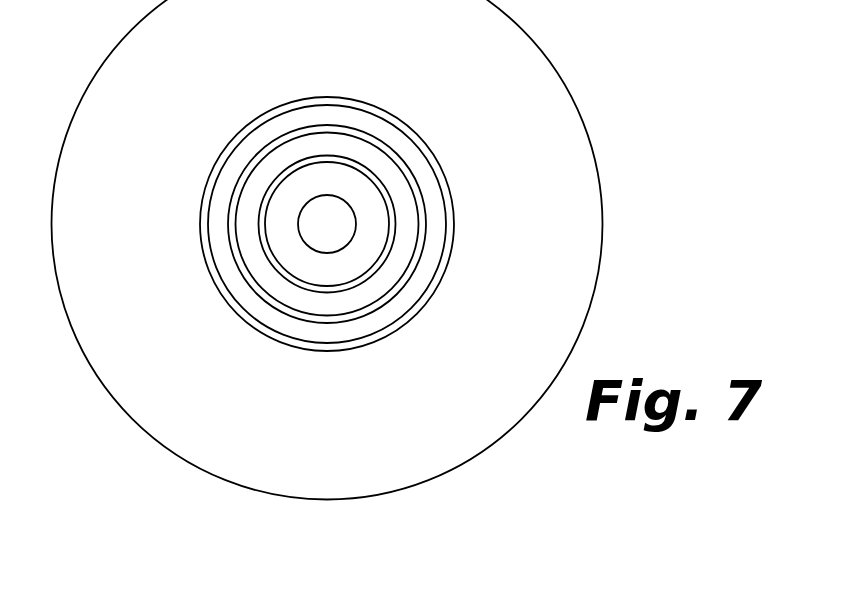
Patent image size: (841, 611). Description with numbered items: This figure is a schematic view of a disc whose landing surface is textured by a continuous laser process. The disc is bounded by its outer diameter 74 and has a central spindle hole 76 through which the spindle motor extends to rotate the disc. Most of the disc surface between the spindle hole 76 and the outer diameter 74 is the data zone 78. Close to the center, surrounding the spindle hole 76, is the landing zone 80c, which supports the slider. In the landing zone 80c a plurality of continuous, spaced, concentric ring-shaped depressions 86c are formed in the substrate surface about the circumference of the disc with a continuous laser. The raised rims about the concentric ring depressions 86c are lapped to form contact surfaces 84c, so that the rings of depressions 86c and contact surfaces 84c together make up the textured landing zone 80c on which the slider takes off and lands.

The outer diameter 74 is at (598, 277).
The spindle hole 76 is at (335, 233).
The data zone 78 is at (369, 250).
The landing zone 80c is at (357, 92).
The contact surfaces 84c is at (375, 184).
The concentric ring-shaped depressions 86c is at (380, 188).